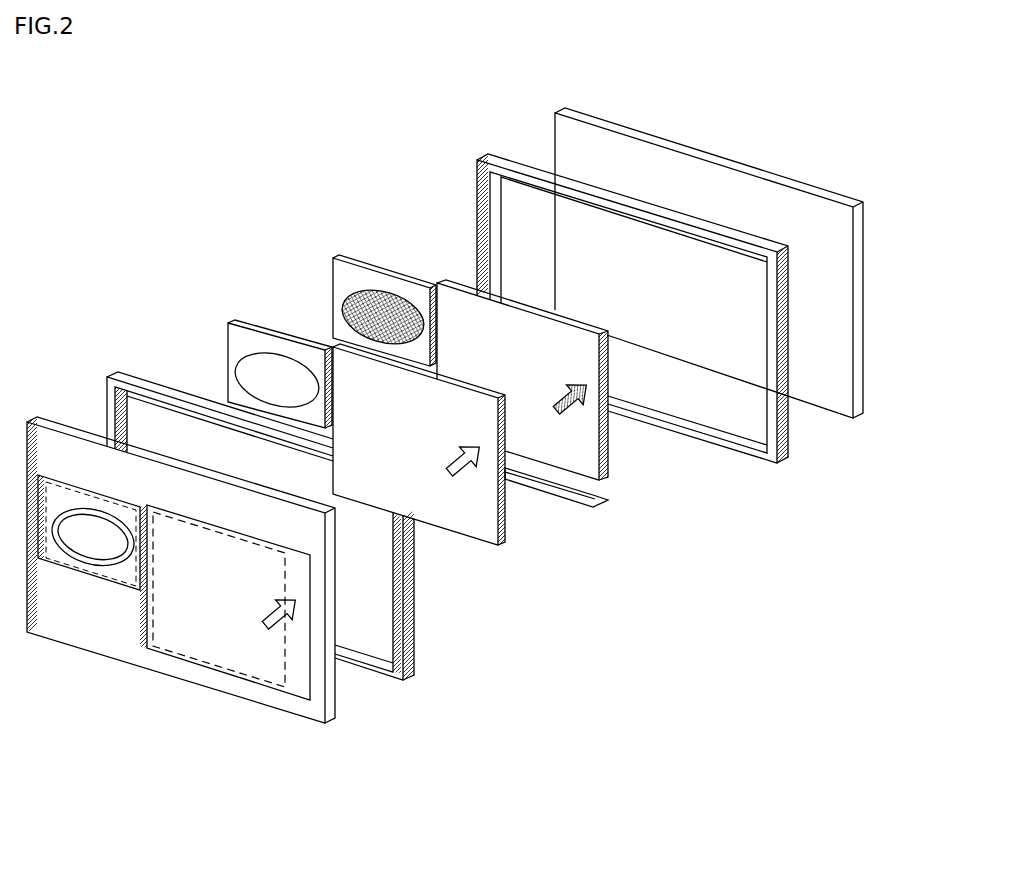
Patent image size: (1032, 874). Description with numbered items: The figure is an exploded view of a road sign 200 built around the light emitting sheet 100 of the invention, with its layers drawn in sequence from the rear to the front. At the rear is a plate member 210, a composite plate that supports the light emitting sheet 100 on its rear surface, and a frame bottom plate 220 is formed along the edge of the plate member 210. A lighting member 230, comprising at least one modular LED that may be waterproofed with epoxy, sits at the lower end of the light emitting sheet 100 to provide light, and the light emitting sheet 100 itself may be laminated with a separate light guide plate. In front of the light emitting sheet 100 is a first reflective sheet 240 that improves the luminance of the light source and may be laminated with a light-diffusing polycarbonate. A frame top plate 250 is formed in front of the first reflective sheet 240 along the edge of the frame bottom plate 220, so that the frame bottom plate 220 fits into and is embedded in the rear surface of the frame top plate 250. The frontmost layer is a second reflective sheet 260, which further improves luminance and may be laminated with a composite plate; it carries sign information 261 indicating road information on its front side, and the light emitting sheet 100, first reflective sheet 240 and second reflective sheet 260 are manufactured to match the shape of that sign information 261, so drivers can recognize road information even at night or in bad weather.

The road sign 200 is at (863, 88).
The plate member 210 is at (835, 382).
The frame bottom plate 220 is at (790, 452).
The lighting member 230 is at (605, 505).
The light emitting sheet 100 is at (598, 452).
The first reflective sheet 240 is at (499, 518).
The frame top plate 250 is at (406, 633).
The second reflective sheet 260 is at (226, 543).
The sign information 261 is at (82, 486).